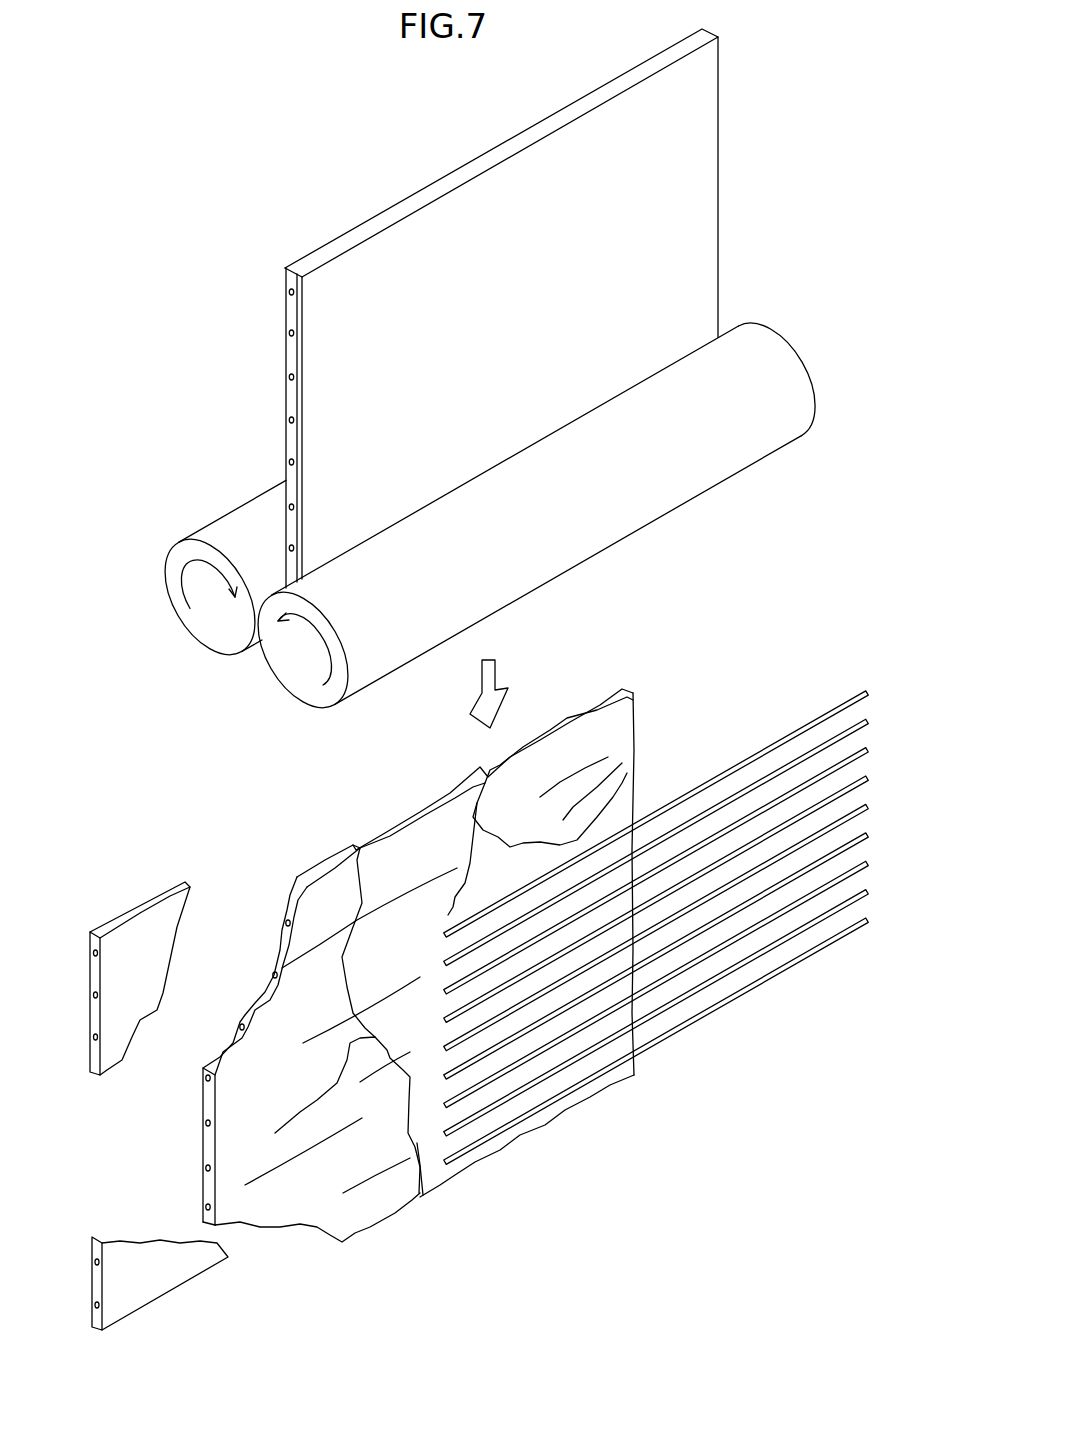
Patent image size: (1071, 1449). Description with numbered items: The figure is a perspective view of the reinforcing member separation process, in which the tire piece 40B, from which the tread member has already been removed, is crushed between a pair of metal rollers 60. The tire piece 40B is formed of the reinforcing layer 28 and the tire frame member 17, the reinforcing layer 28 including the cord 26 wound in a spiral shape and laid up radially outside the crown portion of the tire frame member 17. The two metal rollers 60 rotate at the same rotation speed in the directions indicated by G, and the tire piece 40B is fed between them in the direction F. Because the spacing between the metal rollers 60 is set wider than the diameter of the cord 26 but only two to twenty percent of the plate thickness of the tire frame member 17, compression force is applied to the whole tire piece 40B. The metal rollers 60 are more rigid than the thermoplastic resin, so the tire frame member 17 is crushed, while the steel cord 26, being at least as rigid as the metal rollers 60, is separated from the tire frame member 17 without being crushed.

The tire piece 40B is at (305, 157).
The tire frame member 17 is at (303, 410).
The reinforcing layer 28 is at (292, 268).
The cord 26 is at (781, 740).
The metal rollers 60 is at (205, 622).
The rotation direction G is at (178, 573).
The pressing direction F is at (498, 682).